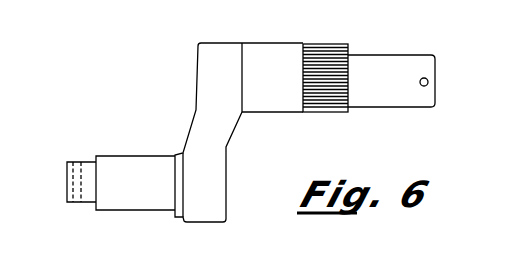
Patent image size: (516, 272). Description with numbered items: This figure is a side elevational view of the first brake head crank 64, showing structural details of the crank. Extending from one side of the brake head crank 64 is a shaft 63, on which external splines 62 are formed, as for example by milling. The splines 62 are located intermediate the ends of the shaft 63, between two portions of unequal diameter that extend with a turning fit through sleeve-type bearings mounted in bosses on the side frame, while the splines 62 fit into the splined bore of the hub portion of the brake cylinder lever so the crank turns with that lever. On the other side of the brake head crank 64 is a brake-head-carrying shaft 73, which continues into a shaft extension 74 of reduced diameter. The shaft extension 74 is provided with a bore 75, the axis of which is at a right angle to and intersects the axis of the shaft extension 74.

The external splines 62 is at (328, 100).
The shaft 63 is at (371, 63).
The first brake head crank 64 is at (232, 136).
The brake-head-carrying shaft 73 is at (147, 170).
The shaft extension 74 is at (90, 192).
The bore 75 is at (80, 162).